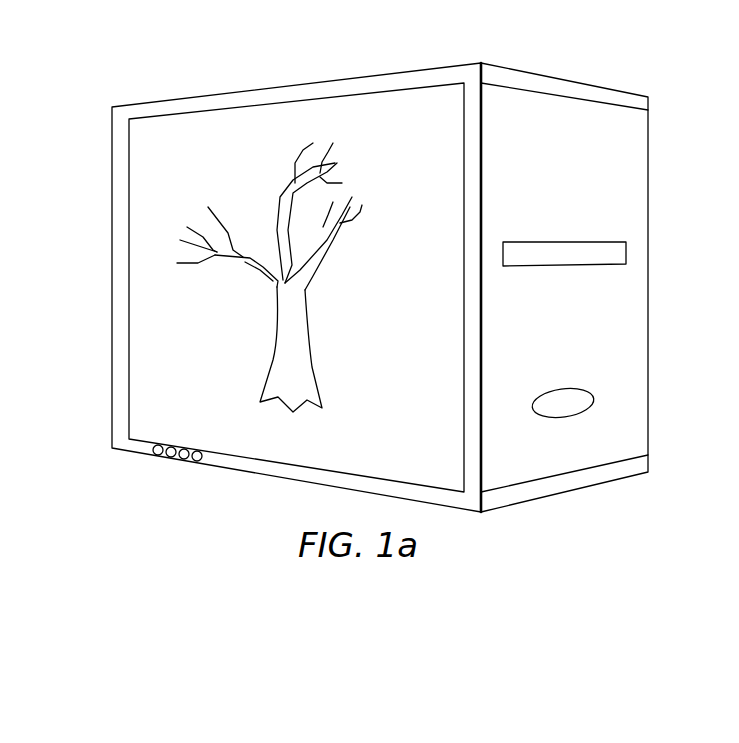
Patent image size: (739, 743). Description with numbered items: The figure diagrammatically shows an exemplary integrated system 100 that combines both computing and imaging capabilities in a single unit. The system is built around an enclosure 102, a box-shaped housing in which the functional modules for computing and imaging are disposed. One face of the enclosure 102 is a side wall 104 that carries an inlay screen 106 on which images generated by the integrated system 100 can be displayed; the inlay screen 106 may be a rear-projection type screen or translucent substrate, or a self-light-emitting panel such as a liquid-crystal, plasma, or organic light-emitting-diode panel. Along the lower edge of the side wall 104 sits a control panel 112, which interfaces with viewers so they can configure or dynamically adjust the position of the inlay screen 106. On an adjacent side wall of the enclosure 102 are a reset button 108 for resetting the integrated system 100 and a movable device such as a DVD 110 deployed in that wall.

The integrated system 100 is at (196, 63).
The enclosure 102 is at (560, 90).
The side wall 104 is at (120, 212).
The inlay screen 106 is at (157, 322).
The reset button 108 is at (577, 398).
The DVD 110 is at (558, 255).
The control panel 112 is at (176, 478).